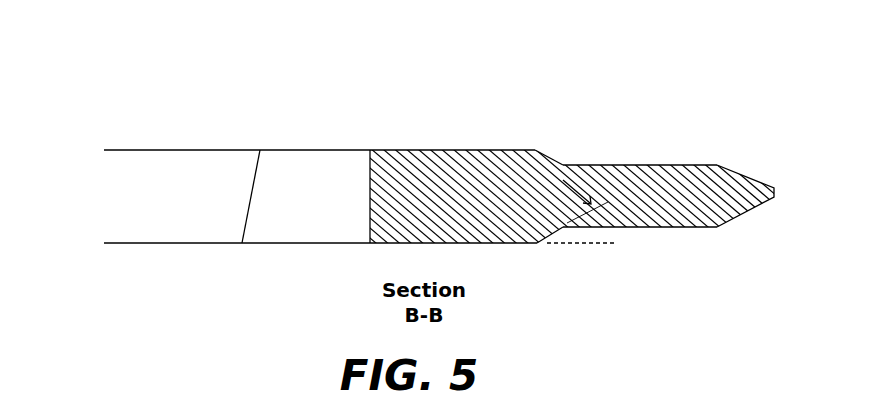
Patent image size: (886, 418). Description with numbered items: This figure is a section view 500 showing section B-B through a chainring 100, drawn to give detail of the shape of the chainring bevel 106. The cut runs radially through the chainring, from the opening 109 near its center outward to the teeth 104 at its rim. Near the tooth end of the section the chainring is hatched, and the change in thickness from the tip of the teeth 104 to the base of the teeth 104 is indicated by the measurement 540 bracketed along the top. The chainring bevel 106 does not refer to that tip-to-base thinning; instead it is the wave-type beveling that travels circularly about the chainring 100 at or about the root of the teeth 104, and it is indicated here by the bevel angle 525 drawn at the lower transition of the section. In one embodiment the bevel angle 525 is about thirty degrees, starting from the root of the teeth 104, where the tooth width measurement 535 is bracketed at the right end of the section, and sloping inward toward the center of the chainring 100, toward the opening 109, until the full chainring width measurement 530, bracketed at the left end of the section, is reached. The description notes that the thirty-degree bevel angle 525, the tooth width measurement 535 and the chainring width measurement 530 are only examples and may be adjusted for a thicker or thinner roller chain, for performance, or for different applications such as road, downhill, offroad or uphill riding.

The section view 500 is at (153, 70).
The chainring 100 is at (410, 150).
The teeth 104 is at (700, 228).
The chainring bevel 106 is at (557, 158).
The opening 109 is at (133, 243).
The bevel angle 525 is at (602, 247).
The chainring width measurement 530 is at (88, 150).
The tooth width measurement 535 is at (782, 148).
The measurement 540 is at (773, 155).